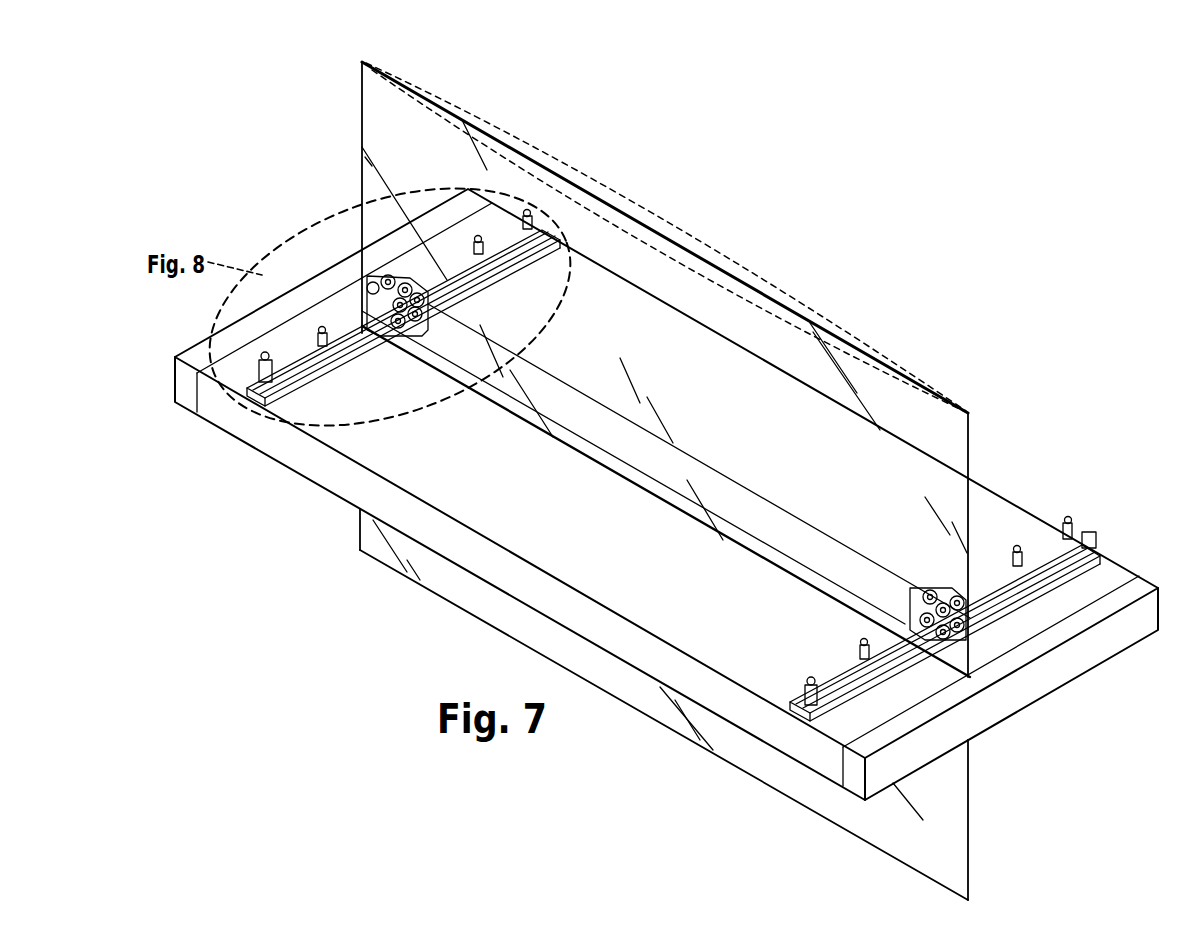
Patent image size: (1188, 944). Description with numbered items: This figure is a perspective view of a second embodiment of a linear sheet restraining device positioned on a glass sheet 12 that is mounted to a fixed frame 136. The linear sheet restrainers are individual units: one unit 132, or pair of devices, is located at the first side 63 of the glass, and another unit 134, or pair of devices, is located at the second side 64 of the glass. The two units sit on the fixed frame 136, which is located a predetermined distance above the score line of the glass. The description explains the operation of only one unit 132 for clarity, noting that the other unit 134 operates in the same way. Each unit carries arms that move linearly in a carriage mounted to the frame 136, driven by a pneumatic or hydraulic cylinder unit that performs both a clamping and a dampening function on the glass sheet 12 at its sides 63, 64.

The glass panel 12 is at (946, 437).
The first side 63 is at (362, 108).
The second side 64 is at (977, 492).
The unit 132 is at (522, 242).
The unit 134 is at (1086, 546).
The fixed frame 136 is at (703, 628).